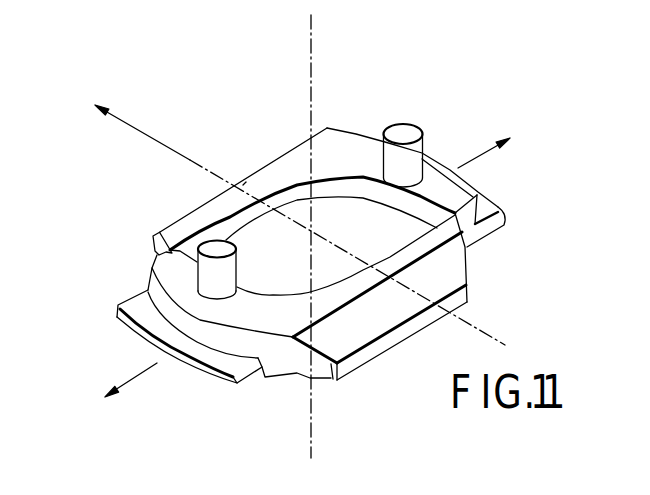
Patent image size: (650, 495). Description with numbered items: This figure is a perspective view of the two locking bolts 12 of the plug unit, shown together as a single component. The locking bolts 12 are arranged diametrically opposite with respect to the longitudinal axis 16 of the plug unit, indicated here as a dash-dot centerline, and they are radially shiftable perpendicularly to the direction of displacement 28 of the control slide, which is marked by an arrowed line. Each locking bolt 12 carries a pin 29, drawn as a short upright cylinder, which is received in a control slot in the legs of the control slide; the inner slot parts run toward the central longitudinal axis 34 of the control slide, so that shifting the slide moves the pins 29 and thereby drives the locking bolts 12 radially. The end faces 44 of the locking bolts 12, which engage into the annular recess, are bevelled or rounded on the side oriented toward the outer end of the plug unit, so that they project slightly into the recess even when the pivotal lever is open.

The locking bolt 12 is at (358, 106).
The longitudinal axis 16 is at (307, 48).
The shifting path 28 is at (152, 135).
The pin 29 is at (213, 277).
The central longitudinal axis 34 is at (243, 185).
The end face 44 is at (482, 190).